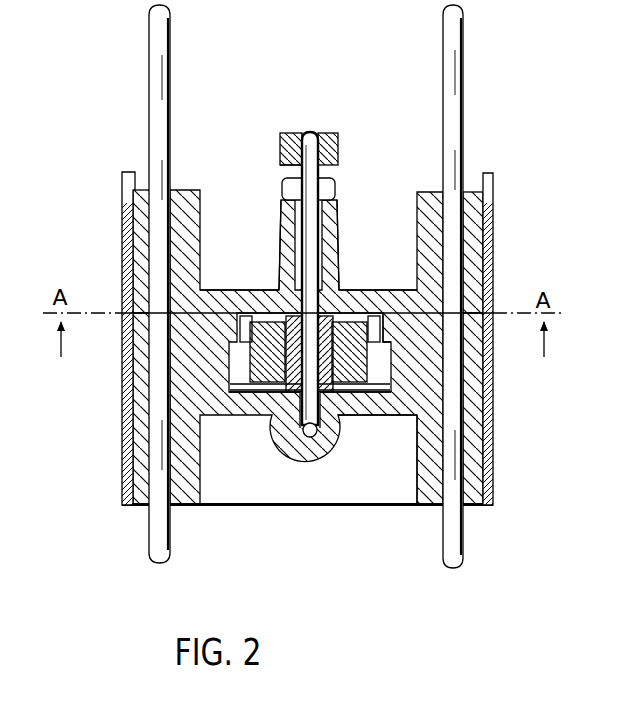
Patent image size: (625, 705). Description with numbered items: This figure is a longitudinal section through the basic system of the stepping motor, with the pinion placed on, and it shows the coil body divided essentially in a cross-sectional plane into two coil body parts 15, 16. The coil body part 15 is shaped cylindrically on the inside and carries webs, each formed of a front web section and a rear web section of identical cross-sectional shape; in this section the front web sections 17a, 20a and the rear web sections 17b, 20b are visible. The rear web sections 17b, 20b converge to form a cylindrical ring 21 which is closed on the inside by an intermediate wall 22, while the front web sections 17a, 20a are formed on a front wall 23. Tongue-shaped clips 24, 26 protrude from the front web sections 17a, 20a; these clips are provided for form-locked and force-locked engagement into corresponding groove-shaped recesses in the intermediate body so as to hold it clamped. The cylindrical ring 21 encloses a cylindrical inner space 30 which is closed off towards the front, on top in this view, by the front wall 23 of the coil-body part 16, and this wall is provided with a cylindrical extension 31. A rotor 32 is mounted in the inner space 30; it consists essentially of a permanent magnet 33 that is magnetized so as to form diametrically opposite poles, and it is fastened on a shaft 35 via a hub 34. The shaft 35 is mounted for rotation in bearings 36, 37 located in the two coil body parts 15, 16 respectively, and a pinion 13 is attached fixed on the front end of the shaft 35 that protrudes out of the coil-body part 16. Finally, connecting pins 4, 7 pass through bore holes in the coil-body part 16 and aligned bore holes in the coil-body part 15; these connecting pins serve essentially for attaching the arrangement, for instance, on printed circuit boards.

The connecting pin 4 is at (156, 68).
The connecting pin 7 is at (450, 80).
The pinion 13 is at (340, 146).
The coil body part 15 is at (333, 508).
The coil body part 16 is at (343, 288).
The front web section 17a is at (137, 218).
The rear web section 17b is at (143, 402).
The front web section 20a is at (477, 226).
The rear web section 20b is at (475, 403).
The cylindrical ring 21 is at (410, 393).
The intermediate wall 22 is at (352, 415).
The front wall 23 is at (228, 302).
The tongue-shaped clip 24 is at (128, 184).
The tongue-shaped clip 26 is at (492, 183).
The inner space 30 is at (386, 390).
The cylindrical extension 31 is at (378, 308).
The rotor 32 is at (250, 392).
The permanent magnet 33 is at (246, 368).
The hub 34 is at (267, 395).
The shaft 35 is at (282, 168).
The bearing 36 is at (310, 438).
The bearing 37 is at (337, 190).